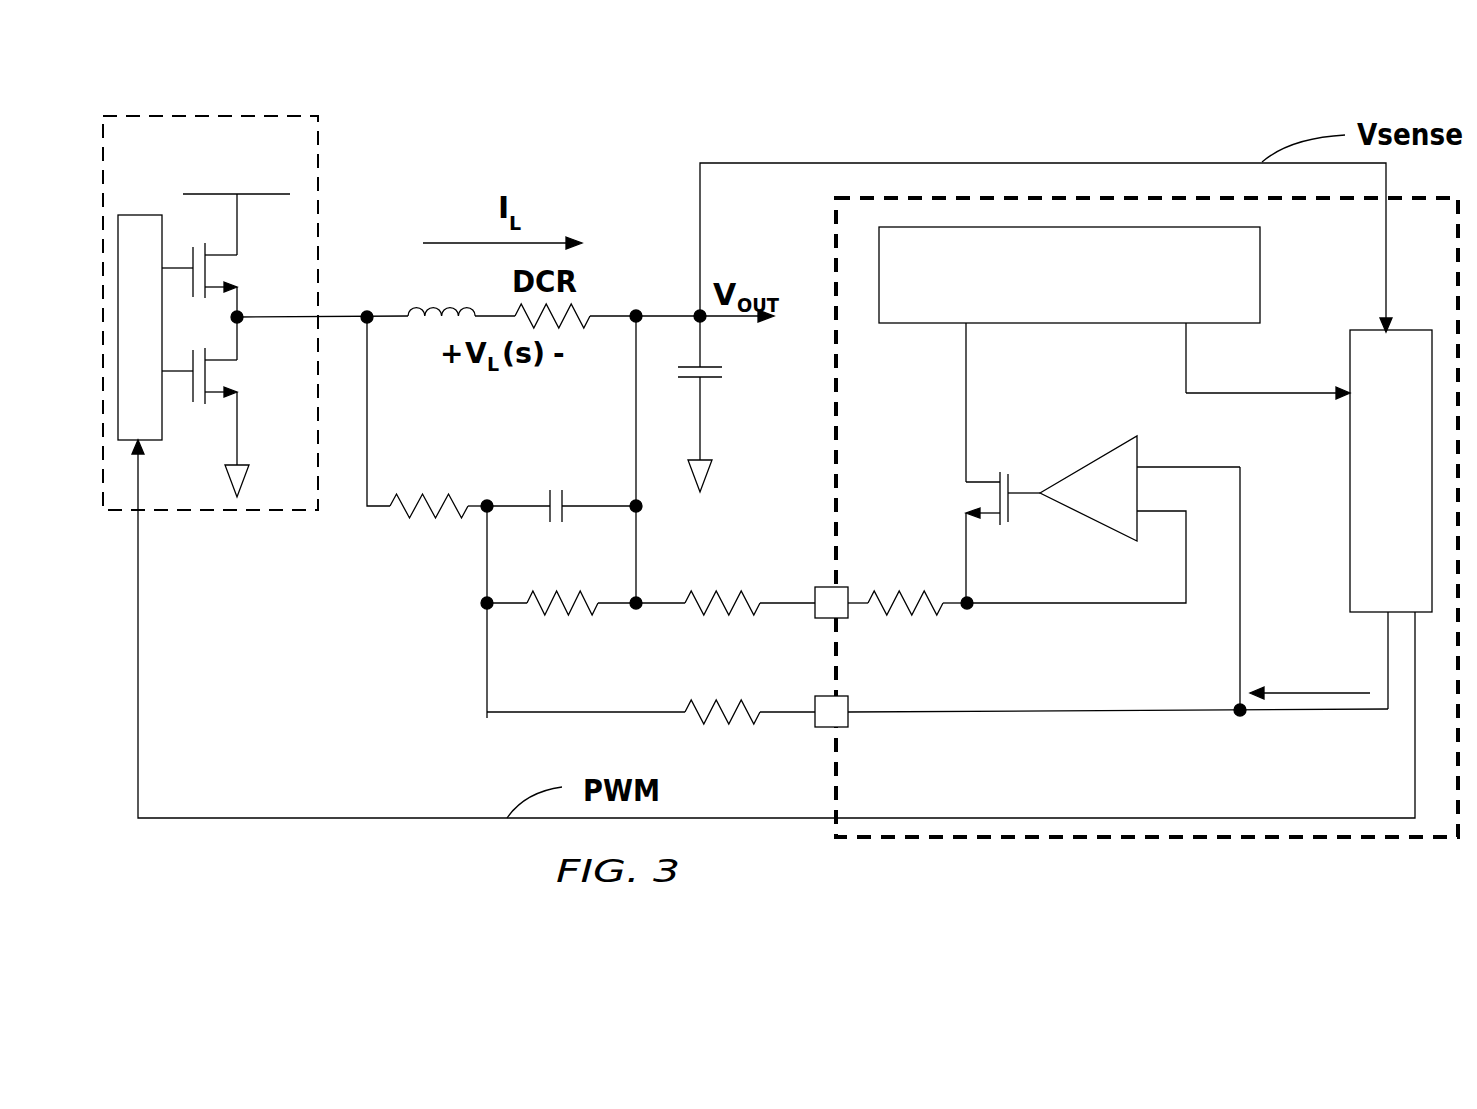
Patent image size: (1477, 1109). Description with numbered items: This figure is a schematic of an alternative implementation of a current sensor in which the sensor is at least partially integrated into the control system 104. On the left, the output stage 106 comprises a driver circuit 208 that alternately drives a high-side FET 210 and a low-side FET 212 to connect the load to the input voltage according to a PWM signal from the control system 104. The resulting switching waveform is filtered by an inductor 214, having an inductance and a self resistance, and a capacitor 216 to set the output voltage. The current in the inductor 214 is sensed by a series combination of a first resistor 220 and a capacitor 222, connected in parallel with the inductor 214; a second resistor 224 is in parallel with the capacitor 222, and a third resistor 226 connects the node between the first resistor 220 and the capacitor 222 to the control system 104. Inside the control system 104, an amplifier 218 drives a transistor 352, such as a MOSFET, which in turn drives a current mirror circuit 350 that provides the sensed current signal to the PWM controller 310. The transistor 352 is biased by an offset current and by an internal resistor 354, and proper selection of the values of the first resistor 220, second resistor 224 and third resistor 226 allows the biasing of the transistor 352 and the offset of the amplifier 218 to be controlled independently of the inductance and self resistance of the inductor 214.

The control system 104 is at (950, 200).
The output stage 106 is at (318, 157).
The driver circuit 208 is at (163, 440).
The high-side FET 210 is at (225, 277).
The low-side FET 212 is at (225, 383).
The inductor 214 is at (452, 298).
The capacitor 216 is at (710, 380).
The first resistor 220 is at (421, 495).
The capacitor 222 is at (567, 500).
The second resistor 224 is at (555, 600).
The third resistor 226 is at (735, 722).
The amplifier 218 is at (1095, 456).
The current mirror circuit 350 is at (1262, 277).
The transistor 352 is at (735, 612).
The internal resistor 354 is at (935, 612).
The PWM controller 310 is at (1406, 322).